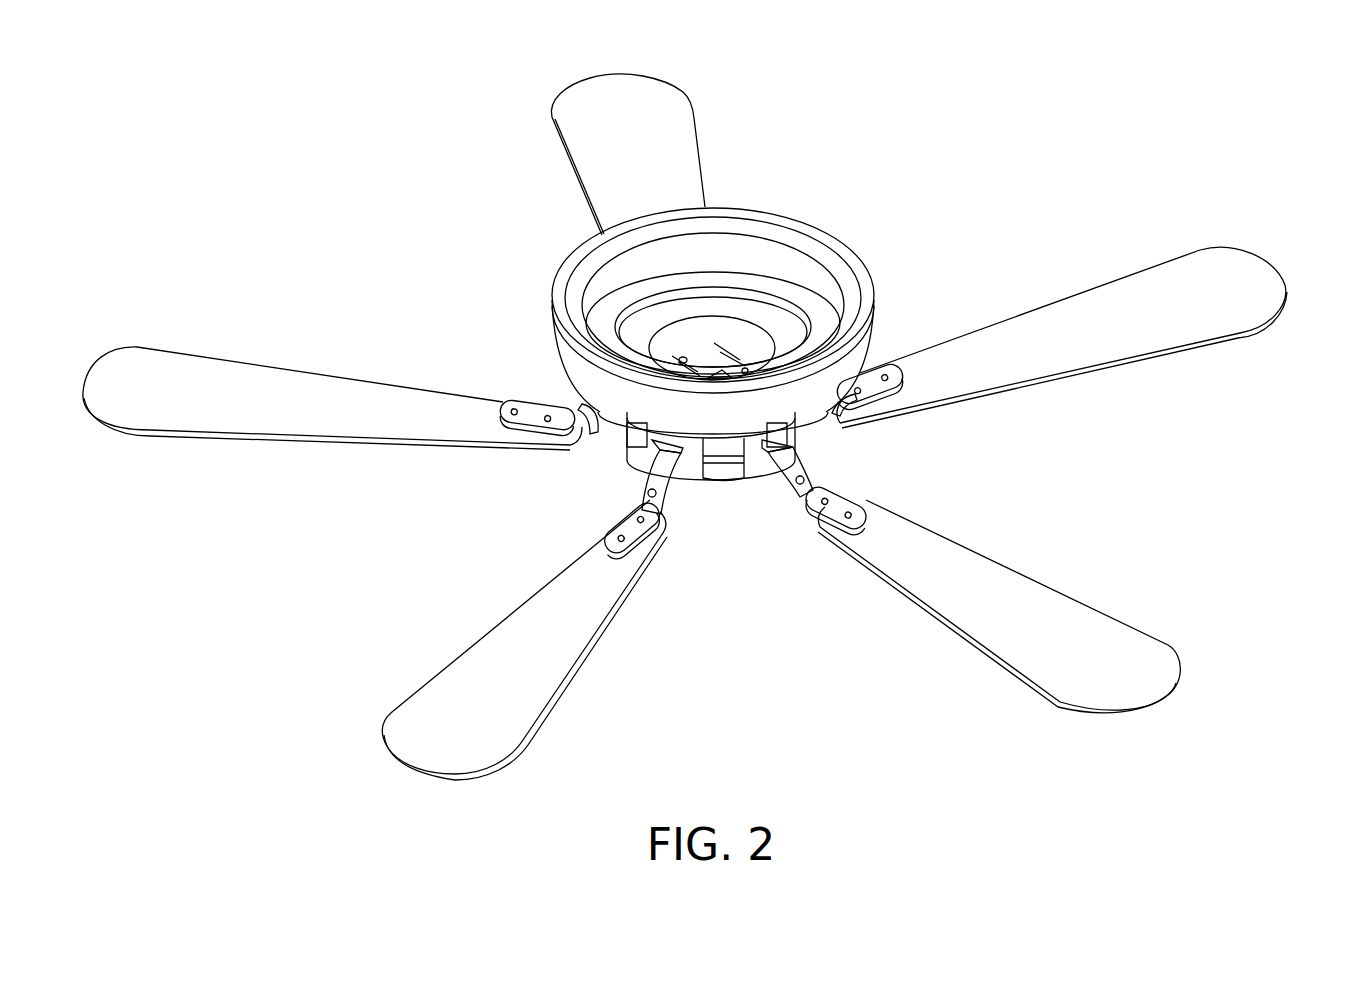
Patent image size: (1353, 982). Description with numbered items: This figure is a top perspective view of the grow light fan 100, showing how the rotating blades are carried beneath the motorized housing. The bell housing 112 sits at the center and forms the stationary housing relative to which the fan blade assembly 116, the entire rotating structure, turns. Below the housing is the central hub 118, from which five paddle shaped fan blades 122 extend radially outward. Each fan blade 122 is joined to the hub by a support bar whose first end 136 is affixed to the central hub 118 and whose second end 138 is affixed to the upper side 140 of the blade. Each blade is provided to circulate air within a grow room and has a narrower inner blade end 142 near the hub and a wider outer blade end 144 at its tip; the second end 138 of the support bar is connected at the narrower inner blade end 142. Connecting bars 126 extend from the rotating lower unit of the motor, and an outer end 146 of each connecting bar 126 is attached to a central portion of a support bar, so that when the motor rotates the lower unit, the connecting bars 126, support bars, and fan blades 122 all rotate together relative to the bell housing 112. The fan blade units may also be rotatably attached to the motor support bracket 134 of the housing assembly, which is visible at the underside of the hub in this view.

The grow light fan 100 is at (243, 124).
The bell housing 112 is at (560, 282).
The fan blade assembly 116 is at (581, 62).
The central hub 118 is at (746, 465).
The fan blade 122 is at (650, 93).
The connecting bars 126 is at (567, 404).
The motor support bracket 134 is at (765, 310).
The first end 136 is at (643, 463).
The second end 138 is at (537, 408).
The upper side 140 is at (690, 133).
The inner blade end 142 is at (868, 362).
The outer blade end 144 is at (558, 120).
The outer end 146 is at (600, 432).